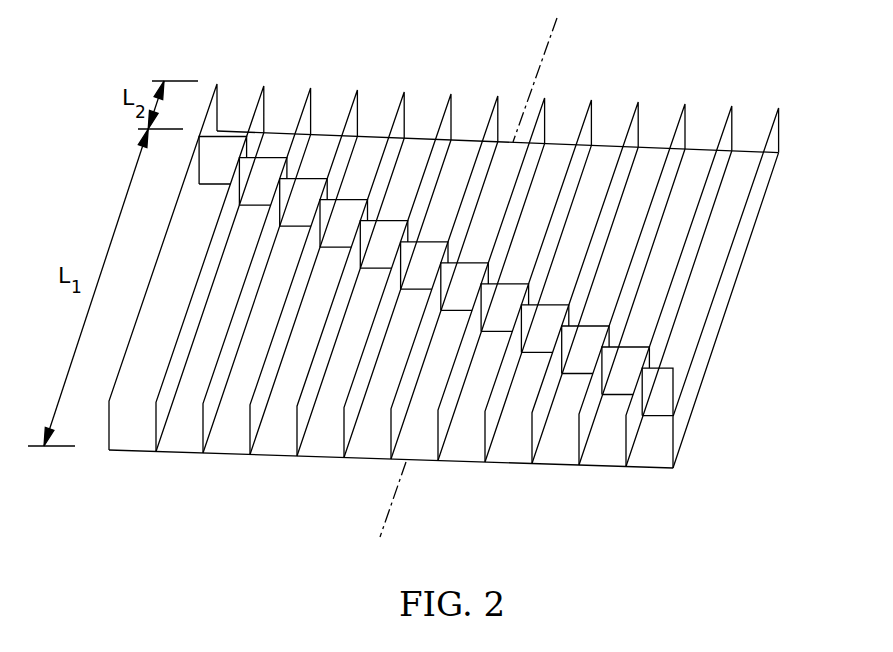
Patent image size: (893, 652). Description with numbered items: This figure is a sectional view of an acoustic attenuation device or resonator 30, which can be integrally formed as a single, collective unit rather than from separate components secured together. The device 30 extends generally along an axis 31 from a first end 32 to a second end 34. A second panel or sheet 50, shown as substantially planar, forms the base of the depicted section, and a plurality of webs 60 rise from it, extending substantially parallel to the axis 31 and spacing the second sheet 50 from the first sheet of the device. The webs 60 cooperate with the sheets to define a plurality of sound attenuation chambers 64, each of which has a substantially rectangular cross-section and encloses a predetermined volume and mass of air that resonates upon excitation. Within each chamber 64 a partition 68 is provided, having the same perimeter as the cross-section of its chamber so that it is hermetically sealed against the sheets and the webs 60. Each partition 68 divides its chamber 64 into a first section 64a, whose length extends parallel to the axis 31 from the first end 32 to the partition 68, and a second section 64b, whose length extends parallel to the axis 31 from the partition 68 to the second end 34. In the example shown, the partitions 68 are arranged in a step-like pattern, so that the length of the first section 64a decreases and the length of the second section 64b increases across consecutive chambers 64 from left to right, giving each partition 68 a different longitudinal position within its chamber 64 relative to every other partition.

The acoustic attenuation device or resonator 30 is at (437, 272).
The axis 31 is at (550, 37).
The first end 32 is at (587, 493).
The second end 34 is at (685, 50).
The second panel or sheet 50 is at (748, 168).
The webs 60 is at (264, 86).
The sound attenuation chambers 64 is at (373, 126).
The first section 64a is at (226, 445).
The second section 64b is at (330, 124).
The partitions 68 is at (252, 196).